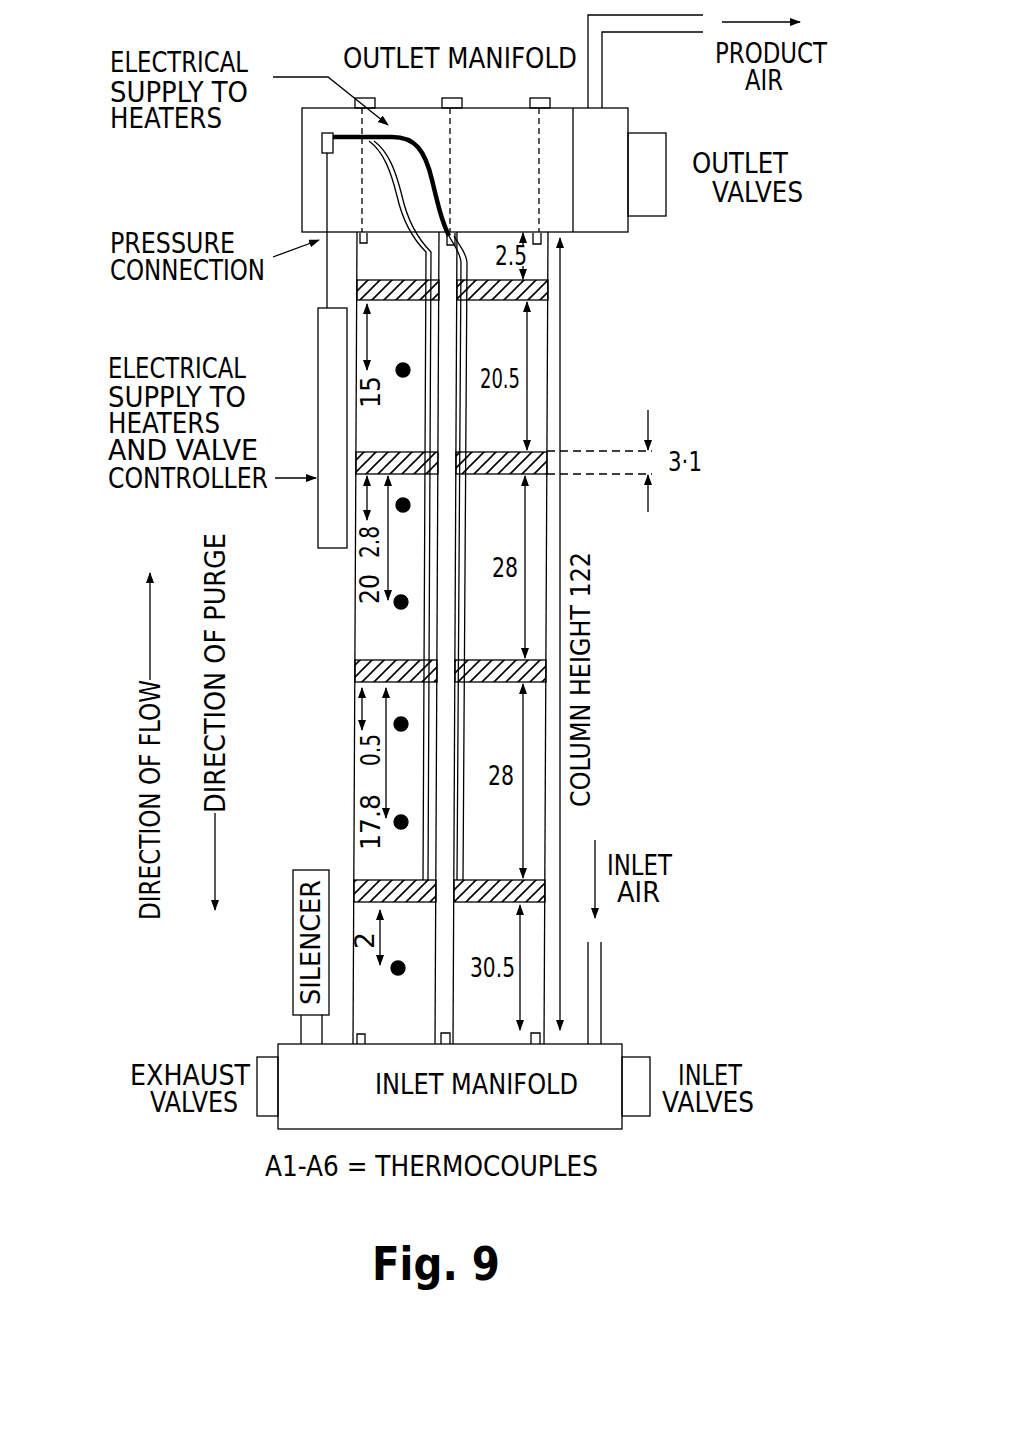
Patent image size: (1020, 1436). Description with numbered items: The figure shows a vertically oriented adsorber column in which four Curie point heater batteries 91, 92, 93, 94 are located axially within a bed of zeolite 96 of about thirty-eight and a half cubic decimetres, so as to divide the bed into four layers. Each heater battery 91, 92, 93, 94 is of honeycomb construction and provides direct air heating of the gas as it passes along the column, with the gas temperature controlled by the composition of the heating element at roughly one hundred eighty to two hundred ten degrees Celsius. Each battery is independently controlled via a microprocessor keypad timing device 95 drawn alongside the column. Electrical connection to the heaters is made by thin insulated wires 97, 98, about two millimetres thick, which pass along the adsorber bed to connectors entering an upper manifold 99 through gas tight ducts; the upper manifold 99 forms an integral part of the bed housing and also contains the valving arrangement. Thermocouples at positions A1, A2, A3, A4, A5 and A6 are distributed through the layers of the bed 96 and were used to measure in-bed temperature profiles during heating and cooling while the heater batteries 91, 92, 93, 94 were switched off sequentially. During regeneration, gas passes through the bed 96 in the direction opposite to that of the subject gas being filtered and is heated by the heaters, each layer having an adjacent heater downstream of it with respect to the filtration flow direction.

The heater battery 91 is at (550, 290).
The heater battery 92 is at (547, 452).
The heater battery 93 is at (362, 672).
The heater battery 94 is at (355, 890).
The microprocessor keypad timing device 95 is at (335, 368).
The bed of zeolite 96 is at (507, 522).
The insulated wire 97 is at (396, 192).
The insulated wire 98 is at (432, 172).
The upper manifold 99 is at (610, 209).
The thermocouple position A1 is at (403, 357).
The thermocouple position A2 is at (407, 522).
The thermocouple position A3 is at (403, 619).
The thermocouple position A4 is at (405, 741).
The thermocouple position A5 is at (404, 839).
The thermocouple position A6 is at (404, 983).